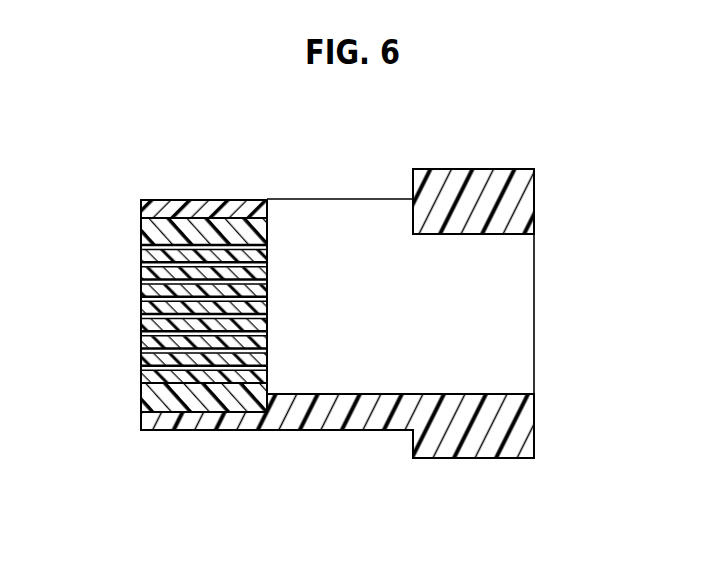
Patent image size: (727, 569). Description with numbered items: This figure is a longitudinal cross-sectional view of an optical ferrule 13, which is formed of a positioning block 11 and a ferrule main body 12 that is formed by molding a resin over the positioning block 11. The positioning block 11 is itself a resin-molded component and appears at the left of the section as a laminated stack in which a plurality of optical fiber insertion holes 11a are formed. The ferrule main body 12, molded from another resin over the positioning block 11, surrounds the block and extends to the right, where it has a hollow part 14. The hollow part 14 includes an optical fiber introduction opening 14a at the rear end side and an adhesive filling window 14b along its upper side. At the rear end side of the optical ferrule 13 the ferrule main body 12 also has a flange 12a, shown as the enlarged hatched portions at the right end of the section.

The positioning block 11 is at (202, 404).
The optical fiber insertion holes 11a is at (142, 298).
The ferrule main body 12 is at (303, 420).
The flange 12a is at (461, 169).
The optical ferrule 13 is at (323, 500).
The hollow part 14 is at (352, 268).
The optical fiber introduction opening 14a is at (513, 300).
The adhesive filling window 14b is at (292, 217).